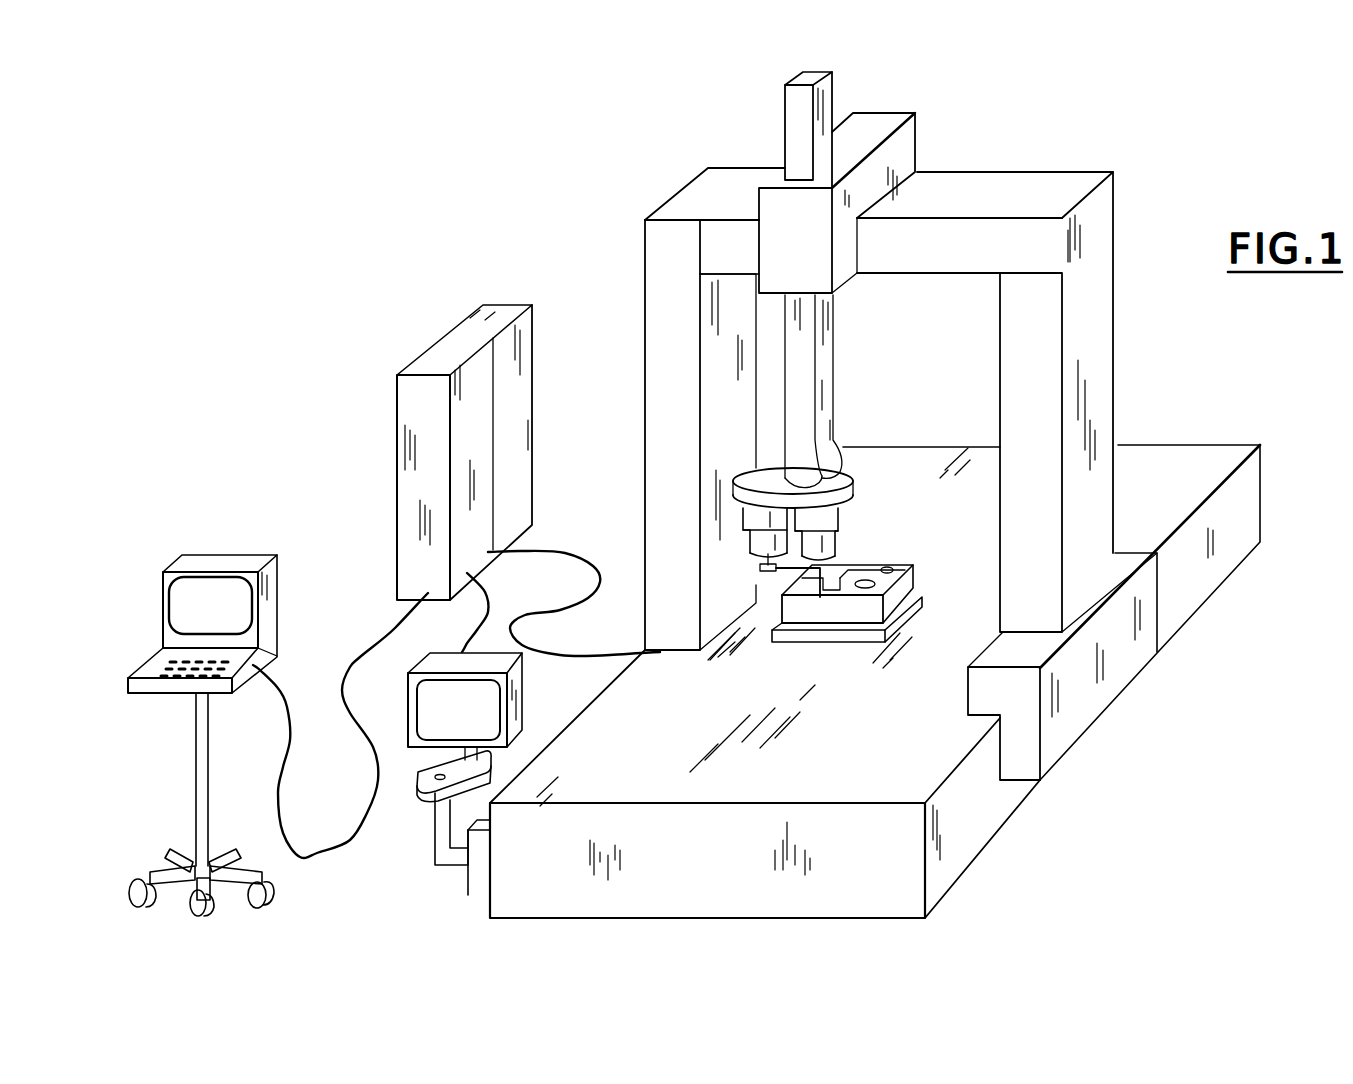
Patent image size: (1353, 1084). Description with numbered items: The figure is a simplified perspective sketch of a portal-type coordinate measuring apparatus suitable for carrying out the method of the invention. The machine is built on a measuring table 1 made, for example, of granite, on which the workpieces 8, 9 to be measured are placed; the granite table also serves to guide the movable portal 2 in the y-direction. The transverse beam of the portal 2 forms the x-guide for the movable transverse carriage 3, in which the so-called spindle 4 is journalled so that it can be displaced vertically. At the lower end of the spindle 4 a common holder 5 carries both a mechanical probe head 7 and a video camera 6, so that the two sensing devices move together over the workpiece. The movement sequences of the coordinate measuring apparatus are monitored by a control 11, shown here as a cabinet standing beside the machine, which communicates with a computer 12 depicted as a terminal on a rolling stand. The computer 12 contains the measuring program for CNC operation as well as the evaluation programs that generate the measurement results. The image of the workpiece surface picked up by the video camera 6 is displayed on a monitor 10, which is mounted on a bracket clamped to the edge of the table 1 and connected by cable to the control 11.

The base 1 is at (1236, 551).
The movable portal 2 is at (1106, 388).
The movable transverse carriage 3 is at (887, 127).
The spindle 4 is at (792, 112).
The common holder 5 is at (849, 479).
The video camera 6 is at (841, 536).
The mechanical probe head 7 is at (745, 534).
The workpiece 8 is at (835, 600).
The workpieces 9 is at (912, 574).
The monitor 10 is at (484, 702).
The control 11 is at (453, 334).
The computer 12 is at (272, 610).